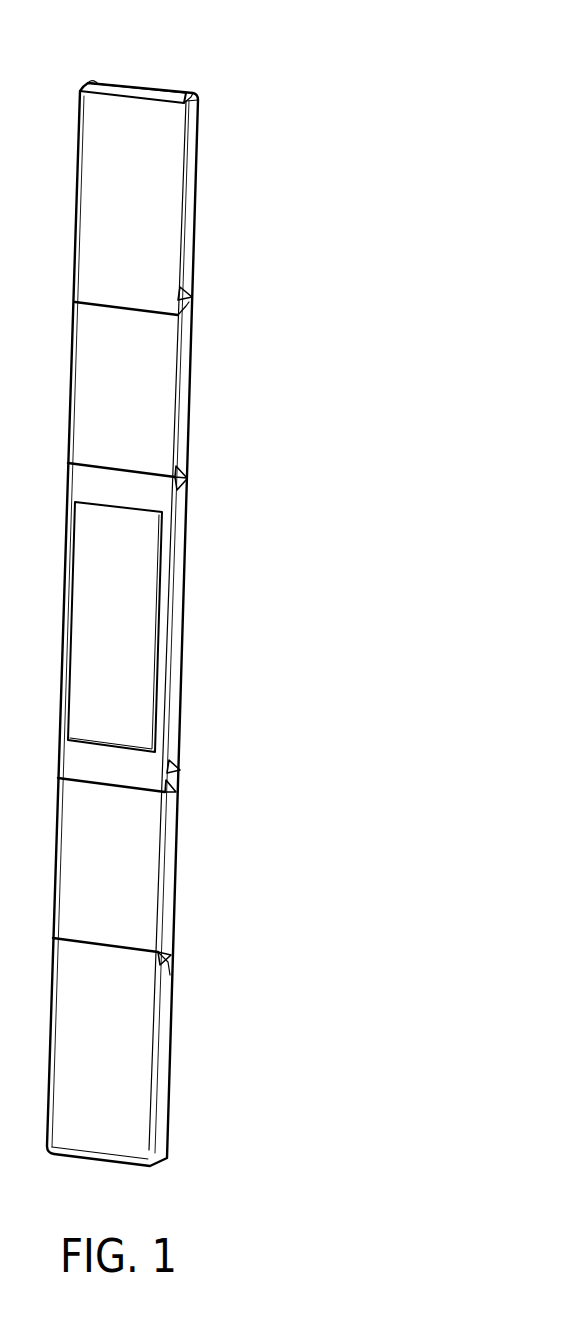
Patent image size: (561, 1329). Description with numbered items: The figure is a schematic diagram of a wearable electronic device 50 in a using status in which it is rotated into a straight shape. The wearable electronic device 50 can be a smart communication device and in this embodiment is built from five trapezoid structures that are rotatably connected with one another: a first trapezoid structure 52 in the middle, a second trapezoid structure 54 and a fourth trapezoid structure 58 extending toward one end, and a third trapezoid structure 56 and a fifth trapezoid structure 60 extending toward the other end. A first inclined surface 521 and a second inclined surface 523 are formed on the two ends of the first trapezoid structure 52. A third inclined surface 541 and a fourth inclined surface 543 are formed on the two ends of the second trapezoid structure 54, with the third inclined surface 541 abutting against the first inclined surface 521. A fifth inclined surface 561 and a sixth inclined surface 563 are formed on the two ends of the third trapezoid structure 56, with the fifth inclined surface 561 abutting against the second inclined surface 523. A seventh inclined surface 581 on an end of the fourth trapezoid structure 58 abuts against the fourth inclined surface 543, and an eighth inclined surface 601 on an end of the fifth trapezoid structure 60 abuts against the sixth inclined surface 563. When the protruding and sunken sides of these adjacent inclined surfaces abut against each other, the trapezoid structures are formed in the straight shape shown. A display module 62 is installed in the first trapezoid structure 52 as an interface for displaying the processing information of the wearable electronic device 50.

The wearable electronic device 50 is at (380, 79).
The fourth trapezoid structure 58 is at (205, 187).
The seventh inclined surface 581 is at (191, 282).
The second trapezoid structure 54 is at (287, 297).
The fourth inclined surface 543 is at (190, 306).
The third inclined surface 541 is at (185, 476).
The first trapezoid structure 52 is at (280, 498).
The first inclined surface 521 is at (188, 500).
The second inclined surface 523 is at (177, 748).
The display module 62 is at (130, 639).
The third trapezoid structure 56 is at (272, 775).
The fifth inclined surface 561 is at (174, 786).
The sixth inclined surface 563 is at (172, 948).
The fifth trapezoid structure 60 is at (187, 1065).
The eighth inclined surface 601 is at (170, 977).